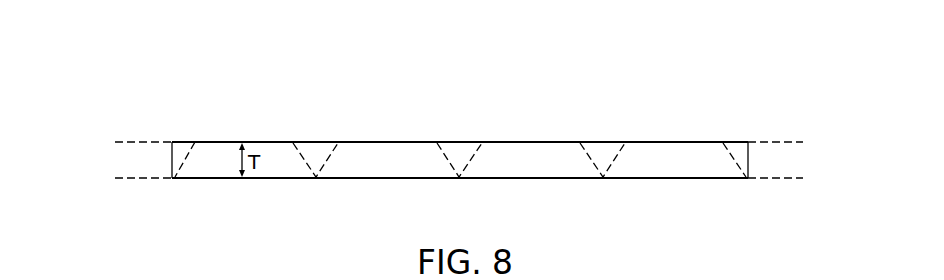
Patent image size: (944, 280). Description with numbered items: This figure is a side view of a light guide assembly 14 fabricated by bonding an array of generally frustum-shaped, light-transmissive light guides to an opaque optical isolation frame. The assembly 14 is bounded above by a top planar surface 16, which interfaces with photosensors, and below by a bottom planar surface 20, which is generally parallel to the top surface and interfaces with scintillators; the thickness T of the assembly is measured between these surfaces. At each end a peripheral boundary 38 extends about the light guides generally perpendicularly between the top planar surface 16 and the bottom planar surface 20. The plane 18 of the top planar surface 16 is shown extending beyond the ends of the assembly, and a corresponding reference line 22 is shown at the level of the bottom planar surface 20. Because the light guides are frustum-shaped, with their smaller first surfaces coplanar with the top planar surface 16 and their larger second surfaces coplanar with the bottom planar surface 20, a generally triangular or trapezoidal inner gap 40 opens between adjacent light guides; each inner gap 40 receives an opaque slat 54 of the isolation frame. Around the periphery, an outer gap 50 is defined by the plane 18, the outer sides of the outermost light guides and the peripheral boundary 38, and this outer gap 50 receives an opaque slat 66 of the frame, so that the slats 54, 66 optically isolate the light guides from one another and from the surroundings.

The light guide assembly 14 is at (178, 68).
The top planar surface 16 is at (403, 142).
The bottom planar surface 20 is at (388, 180).
The plane of the top planar surface 18 is at (137, 141).
The second plane reference line 22 is at (138, 178).
The peripheral boundary 38 is at (172, 158).
The outer gap 50 is at (458, 135).
The slat 66 is at (181, 148).
The inner gap 40 is at (459, 135).
The slat 54 is at (313, 150).